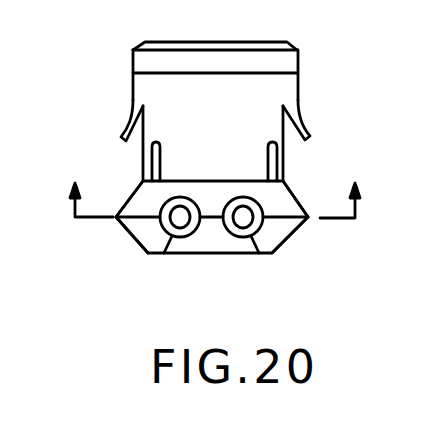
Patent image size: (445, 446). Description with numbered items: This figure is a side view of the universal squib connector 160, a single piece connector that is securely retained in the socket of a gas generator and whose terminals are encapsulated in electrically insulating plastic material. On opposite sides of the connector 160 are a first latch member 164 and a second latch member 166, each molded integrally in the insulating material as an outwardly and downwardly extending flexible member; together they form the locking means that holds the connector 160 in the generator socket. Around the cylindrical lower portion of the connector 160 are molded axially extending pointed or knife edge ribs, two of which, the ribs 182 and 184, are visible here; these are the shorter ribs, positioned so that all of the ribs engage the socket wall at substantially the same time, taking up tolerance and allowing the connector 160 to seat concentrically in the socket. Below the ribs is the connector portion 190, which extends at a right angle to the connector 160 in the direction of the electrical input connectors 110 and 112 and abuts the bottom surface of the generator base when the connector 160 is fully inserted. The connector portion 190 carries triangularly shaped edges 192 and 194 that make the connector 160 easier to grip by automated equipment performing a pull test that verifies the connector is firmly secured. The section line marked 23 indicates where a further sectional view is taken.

The universal squib connector 160 is at (180, 80).
The first latch member 164 is at (304, 118).
The second latch member 166 is at (125, 126).
The rib 182 is at (275, 157).
The rib 184 is at (149, 156).
The connector portion 190 is at (208, 248).
The triangularly shaped edge 192 is at (305, 226).
The triangularly shaped edge 194 is at (118, 224).
The electrical input connector 110 is at (262, 256).
The electrical input connector 112 is at (166, 256).
The section line 23 is at (214, 200).